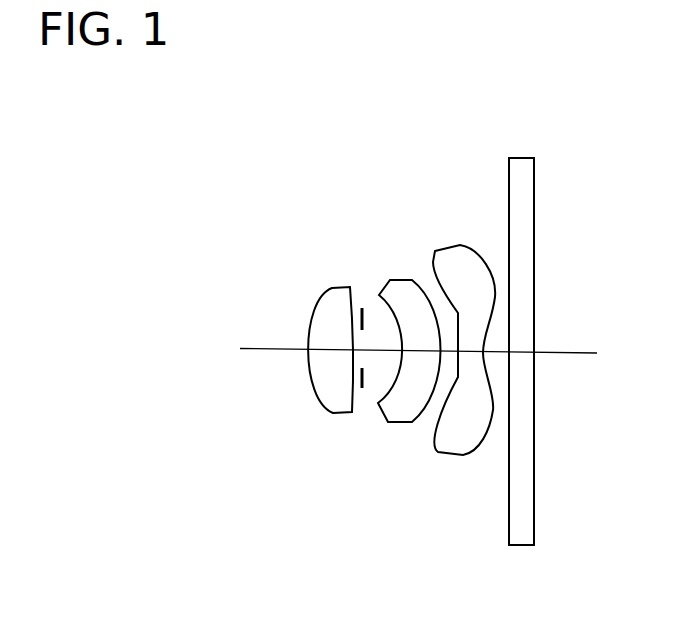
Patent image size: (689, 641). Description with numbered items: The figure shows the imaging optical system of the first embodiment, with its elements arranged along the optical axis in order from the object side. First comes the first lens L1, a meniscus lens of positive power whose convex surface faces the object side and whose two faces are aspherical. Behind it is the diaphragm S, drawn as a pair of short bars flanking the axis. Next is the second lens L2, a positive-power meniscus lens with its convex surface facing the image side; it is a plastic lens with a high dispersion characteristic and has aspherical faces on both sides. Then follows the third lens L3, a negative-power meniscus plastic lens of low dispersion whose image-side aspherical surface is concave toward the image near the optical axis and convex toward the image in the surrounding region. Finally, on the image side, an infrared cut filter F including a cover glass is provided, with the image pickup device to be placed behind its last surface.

The first lens L1 is at (343, 297).
The diaphragm S is at (363, 390).
The second lens L2 is at (398, 297).
The third lens L3 is at (445, 442).
The infrared cut filter F is at (525, 172).